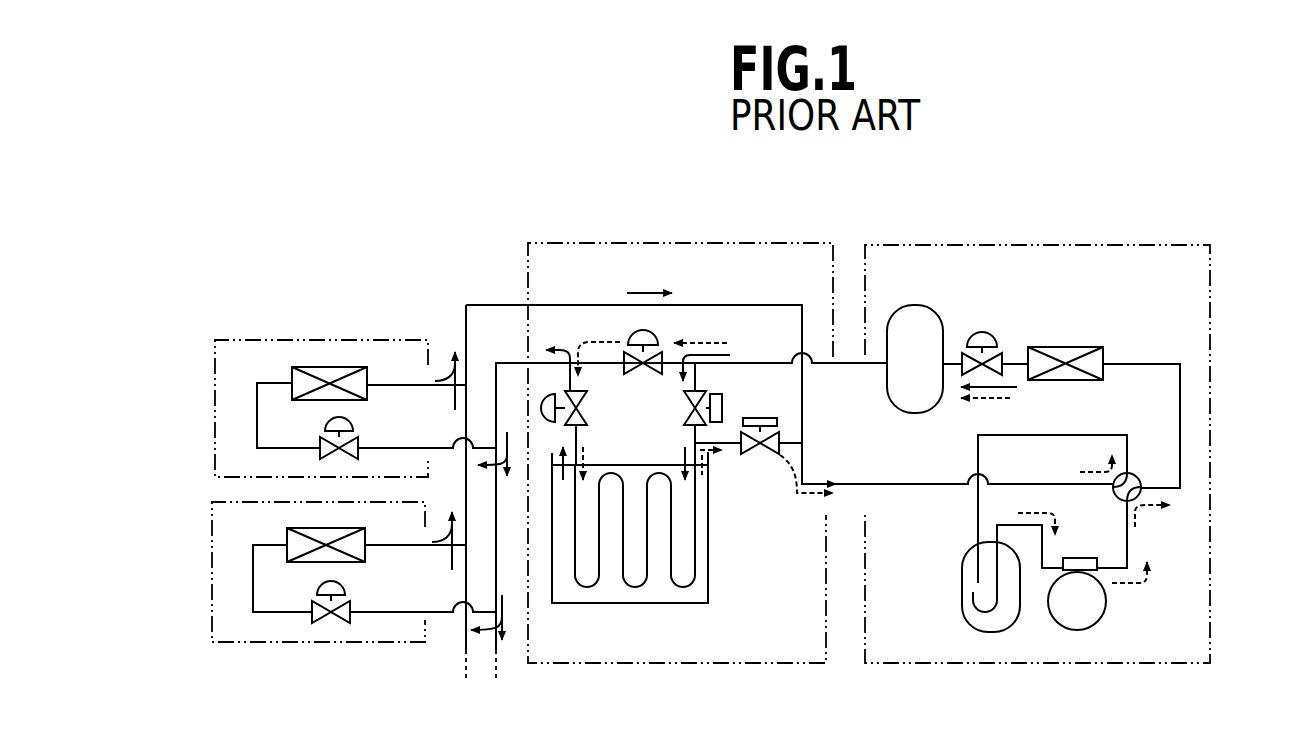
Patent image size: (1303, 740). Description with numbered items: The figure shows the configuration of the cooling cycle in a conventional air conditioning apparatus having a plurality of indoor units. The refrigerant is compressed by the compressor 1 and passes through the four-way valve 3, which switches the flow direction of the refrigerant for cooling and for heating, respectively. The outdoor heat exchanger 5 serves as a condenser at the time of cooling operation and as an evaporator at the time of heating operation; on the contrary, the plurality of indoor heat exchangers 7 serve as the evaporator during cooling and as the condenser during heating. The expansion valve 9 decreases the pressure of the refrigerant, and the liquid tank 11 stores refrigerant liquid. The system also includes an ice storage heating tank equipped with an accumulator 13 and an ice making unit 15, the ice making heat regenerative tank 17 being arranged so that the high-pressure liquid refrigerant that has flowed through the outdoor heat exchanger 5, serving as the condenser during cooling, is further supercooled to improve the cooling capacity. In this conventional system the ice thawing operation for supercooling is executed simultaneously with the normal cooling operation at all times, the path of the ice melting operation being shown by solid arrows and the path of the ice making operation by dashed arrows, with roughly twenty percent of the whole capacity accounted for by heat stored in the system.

The compressor 1 is at (1105, 604).
The 4-way valve 3 is at (1138, 477).
The outdoor heat exchanger 5 is at (1070, 347).
The indoor heat exchangers 7 is at (312, 366).
The expansion valve 9 is at (990, 332).
The liquid tank 11 is at (925, 305).
The accumulator 13 is at (962, 592).
The ice making unit 15 is at (695, 560).
The ice making heat regenerative tank 17 is at (615, 603).